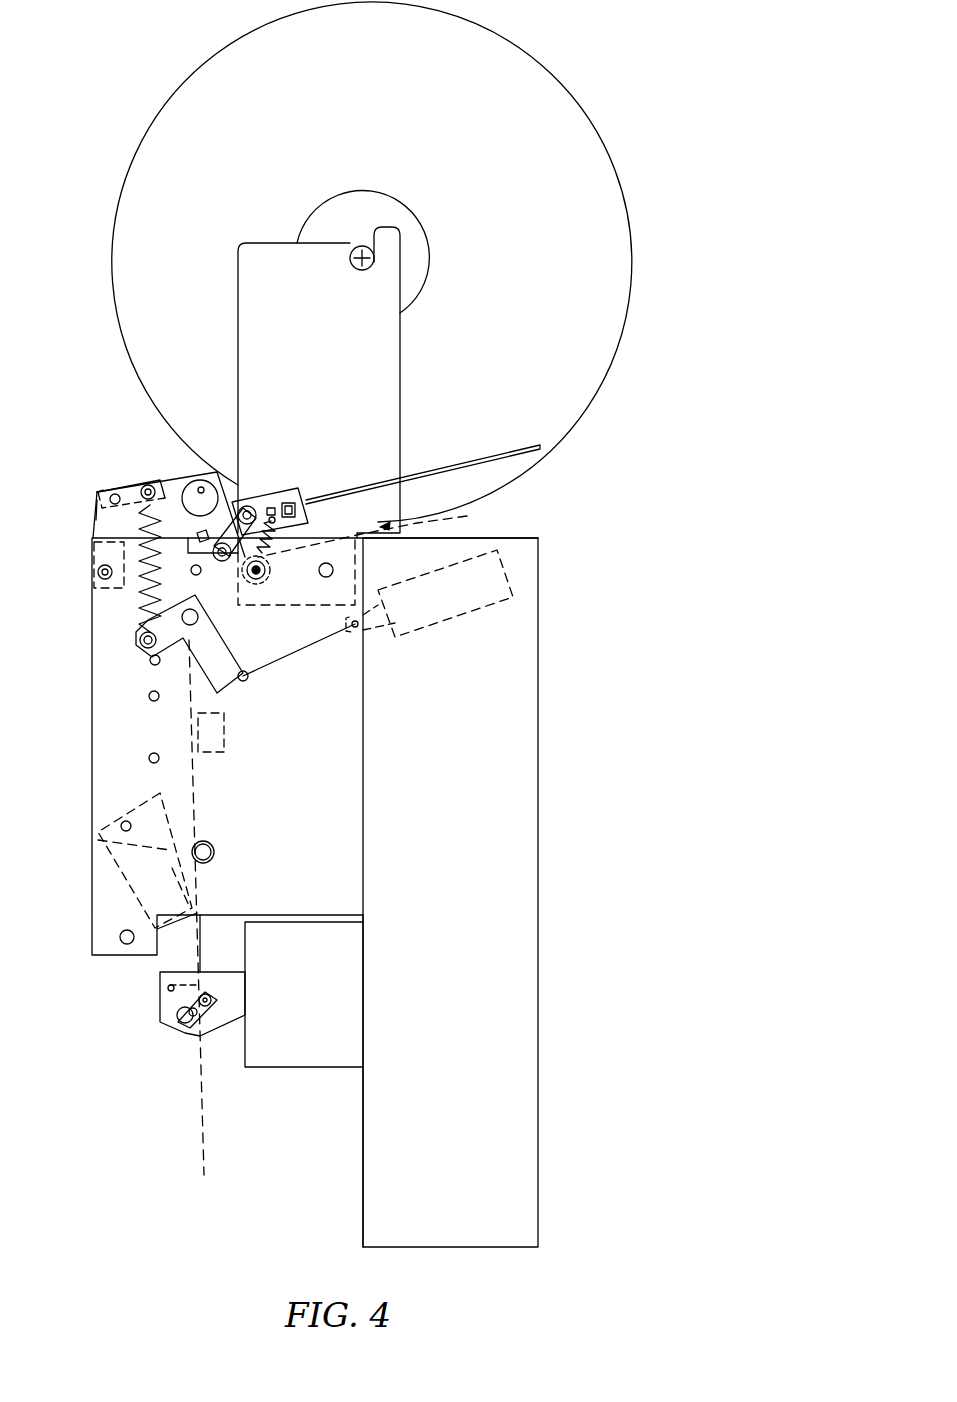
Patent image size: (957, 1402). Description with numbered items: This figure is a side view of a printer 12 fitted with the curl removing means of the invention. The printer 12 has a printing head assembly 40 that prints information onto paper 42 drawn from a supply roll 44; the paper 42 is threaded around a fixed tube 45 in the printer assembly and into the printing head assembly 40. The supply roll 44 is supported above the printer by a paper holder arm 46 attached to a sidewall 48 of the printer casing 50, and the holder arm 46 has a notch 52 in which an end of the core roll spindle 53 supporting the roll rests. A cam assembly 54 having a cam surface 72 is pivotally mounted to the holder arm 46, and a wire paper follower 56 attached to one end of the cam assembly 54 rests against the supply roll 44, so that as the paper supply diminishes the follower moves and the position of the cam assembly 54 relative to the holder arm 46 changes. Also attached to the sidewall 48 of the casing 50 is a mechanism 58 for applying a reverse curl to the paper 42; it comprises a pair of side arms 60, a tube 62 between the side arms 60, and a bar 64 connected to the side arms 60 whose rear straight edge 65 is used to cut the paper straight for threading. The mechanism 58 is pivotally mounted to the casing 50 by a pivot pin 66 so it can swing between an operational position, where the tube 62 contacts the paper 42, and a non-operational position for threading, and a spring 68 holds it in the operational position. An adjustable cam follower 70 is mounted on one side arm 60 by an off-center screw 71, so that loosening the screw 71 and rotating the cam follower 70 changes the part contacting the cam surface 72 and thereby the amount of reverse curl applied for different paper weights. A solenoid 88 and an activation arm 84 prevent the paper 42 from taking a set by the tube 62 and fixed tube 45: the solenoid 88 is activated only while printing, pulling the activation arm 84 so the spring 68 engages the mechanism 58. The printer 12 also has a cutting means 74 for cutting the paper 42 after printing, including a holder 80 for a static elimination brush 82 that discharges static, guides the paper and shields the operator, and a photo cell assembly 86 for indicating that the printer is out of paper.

The printer 12 is at (365, 878).
The printing head assembly 40 is at (98, 841).
The paper 42 is at (379, 530).
The supply roll 44 is at (163, 92).
The fixed tube 45 is at (200, 575).
The paper holder arm 46 is at (340, 383).
The sidewall 48 is at (293, 821).
The printer casing 50 is at (540, 1193).
The notch 52 is at (343, 280).
The core roll spindle 53 is at (357, 249).
The cam assembly 54 is at (290, 492).
The paper follower 56 is at (522, 445).
The mechanism for applying a reverse curl 58 is at (92, 510).
The side arm 60 is at (110, 527).
The tube 62 is at (228, 560).
The bar 64 is at (128, 490).
The rear straight edge 65 is at (100, 488).
The pivot pin 66 is at (92, 577).
The spring 68 is at (140, 607).
The adjustable cam follower 70 is at (197, 485).
The screw 71 is at (198, 488).
The cam surface 72 is at (237, 503).
The cutting means 74 is at (178, 1010).
The holder 80 is at (160, 1025).
The static elimination brush 82 is at (197, 1040).
The activation arm 84 is at (243, 674).
The photo cell assembly 86 is at (224, 733).
The solenoid 88 is at (488, 588).